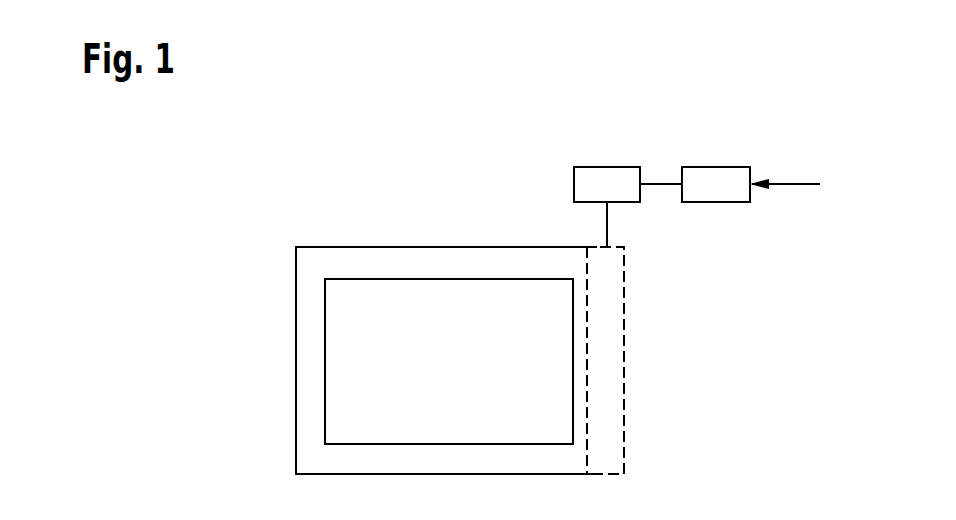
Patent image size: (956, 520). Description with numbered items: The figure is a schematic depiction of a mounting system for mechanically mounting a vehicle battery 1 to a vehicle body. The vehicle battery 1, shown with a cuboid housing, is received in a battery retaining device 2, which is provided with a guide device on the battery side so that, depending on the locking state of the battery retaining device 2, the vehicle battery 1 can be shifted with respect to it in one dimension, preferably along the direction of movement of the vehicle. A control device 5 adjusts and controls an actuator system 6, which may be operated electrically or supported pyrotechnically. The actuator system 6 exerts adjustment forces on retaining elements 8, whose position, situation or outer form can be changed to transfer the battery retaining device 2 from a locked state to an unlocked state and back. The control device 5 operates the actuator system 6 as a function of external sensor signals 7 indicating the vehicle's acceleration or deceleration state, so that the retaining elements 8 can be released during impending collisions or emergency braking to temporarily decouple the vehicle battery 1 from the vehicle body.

The vehicle battery 1 is at (413, 279).
The battery retaining device 2 is at (478, 246).
The control device 5 is at (718, 165).
The actuator system 6 is at (609, 165).
The external sensor signals 7 is at (795, 182).
The retaining elements 8 is at (624, 410).